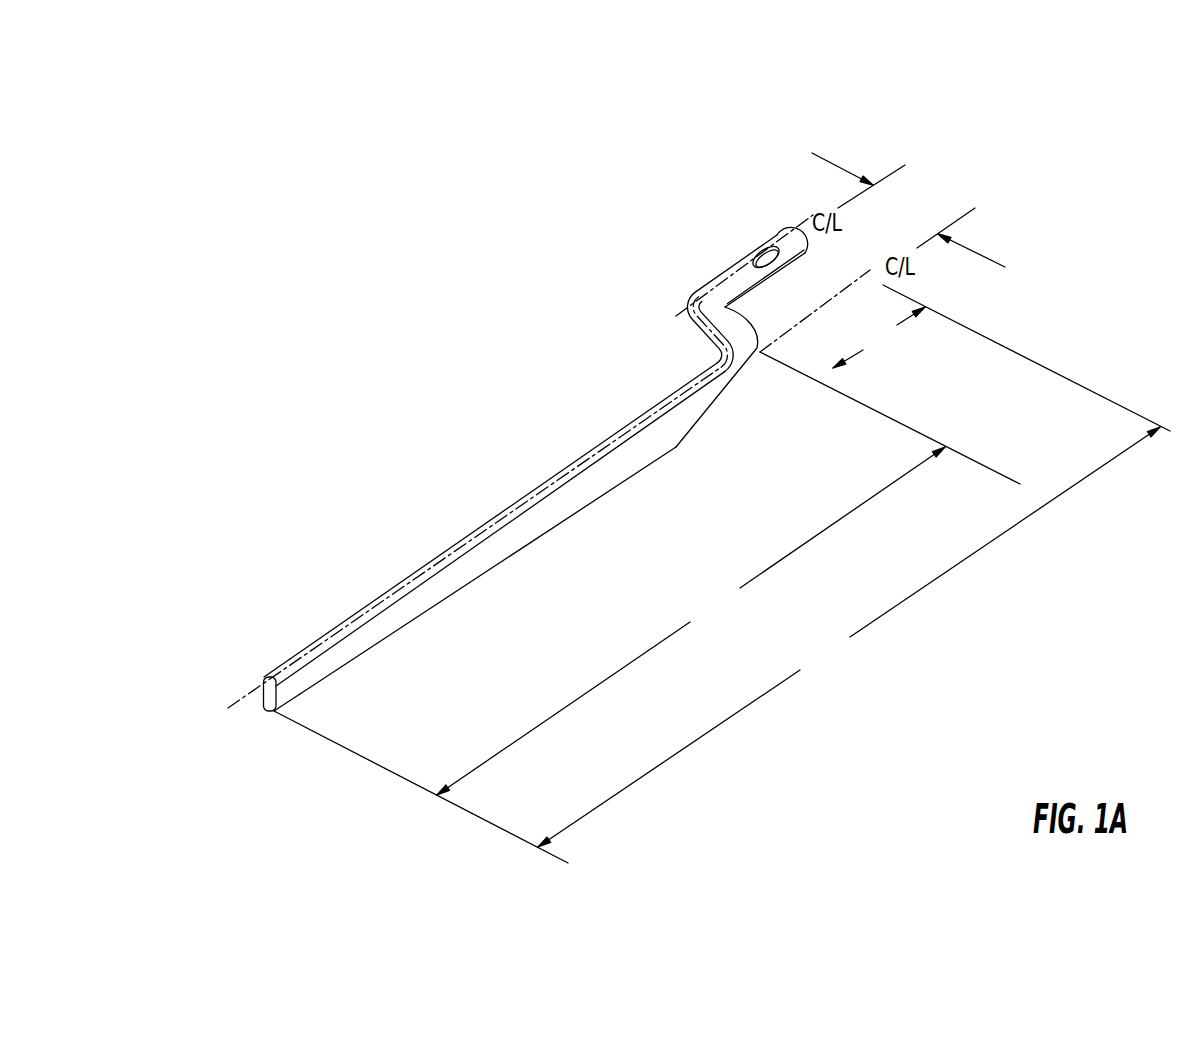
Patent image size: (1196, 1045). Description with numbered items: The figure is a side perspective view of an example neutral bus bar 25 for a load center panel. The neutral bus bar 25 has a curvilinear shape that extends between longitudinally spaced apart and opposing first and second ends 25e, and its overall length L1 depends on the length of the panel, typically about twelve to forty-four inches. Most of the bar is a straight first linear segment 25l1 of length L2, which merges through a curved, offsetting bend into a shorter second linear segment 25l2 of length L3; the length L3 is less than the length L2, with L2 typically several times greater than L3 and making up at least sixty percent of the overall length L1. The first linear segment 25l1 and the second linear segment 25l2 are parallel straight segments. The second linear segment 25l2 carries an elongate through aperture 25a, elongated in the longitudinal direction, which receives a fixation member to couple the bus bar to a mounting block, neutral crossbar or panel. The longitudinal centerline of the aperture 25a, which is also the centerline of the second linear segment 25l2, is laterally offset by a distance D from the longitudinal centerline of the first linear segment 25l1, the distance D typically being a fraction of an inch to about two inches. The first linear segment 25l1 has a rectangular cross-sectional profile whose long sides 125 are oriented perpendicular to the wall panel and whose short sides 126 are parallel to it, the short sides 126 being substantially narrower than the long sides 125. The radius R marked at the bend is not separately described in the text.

The neutral bus bar 25 is at (485, 453).
The through aperture 25a is at (758, 247).
The first and second ends 25e is at (780, 233).
The first linear segment 25l1 is at (300, 678).
The second linear segment 25l2 is at (721, 314).
The long sides 125 is at (268, 705).
The short sides 126 is at (268, 678).
The lateral offset distance D is at (908, 210).
The bend radius R is at (742, 310).
The overall length L1 is at (849, 637).
The length of first linear segment L2 is at (691, 621).
The length of second linear segment L3 is at (879, 337).